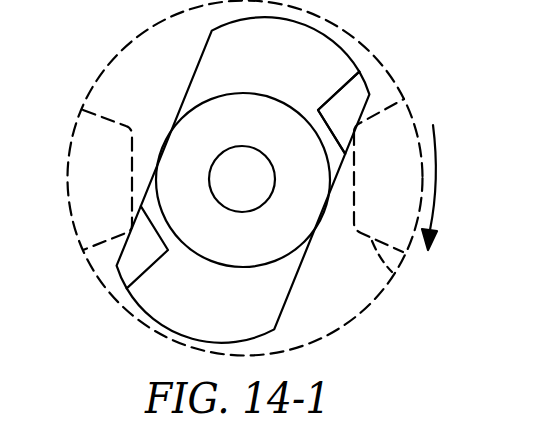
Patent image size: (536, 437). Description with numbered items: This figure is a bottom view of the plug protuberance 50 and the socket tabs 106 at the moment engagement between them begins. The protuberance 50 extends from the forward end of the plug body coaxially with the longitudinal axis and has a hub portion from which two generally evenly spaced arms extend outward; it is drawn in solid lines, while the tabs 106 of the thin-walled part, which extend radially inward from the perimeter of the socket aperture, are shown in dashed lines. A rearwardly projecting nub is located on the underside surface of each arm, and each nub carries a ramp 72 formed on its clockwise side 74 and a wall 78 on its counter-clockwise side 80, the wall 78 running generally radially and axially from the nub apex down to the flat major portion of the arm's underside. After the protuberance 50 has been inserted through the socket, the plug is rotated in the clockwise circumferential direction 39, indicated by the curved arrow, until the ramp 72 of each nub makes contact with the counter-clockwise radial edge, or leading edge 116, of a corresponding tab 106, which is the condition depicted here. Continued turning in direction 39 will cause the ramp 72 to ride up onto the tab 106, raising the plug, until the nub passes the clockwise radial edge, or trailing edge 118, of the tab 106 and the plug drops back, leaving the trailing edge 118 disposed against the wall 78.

The clockwise circumferential direction 39 is at (438, 181).
The protuberance 50 is at (205, 80).
The ramp 72 is at (407, 101).
The clockwise side 74 is at (366, 108).
The wall 78 is at (306, 94).
The counter-clockwise side 80 is at (329, 99).
The tab 106 is at (95, 170).
The leading edge 116 is at (403, 100).
The trailing edge 118 is at (392, 272).